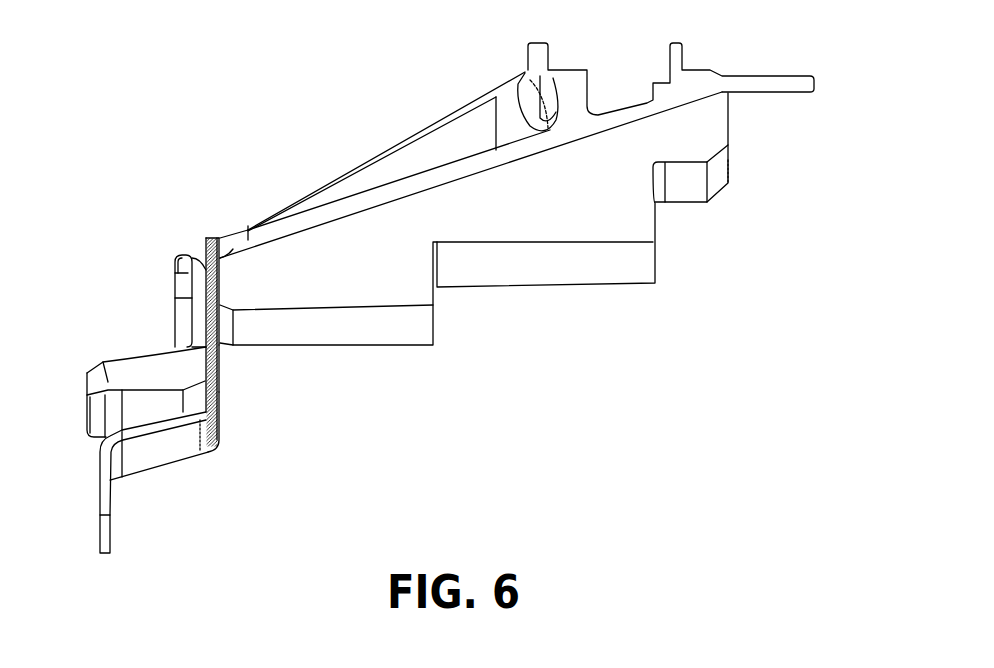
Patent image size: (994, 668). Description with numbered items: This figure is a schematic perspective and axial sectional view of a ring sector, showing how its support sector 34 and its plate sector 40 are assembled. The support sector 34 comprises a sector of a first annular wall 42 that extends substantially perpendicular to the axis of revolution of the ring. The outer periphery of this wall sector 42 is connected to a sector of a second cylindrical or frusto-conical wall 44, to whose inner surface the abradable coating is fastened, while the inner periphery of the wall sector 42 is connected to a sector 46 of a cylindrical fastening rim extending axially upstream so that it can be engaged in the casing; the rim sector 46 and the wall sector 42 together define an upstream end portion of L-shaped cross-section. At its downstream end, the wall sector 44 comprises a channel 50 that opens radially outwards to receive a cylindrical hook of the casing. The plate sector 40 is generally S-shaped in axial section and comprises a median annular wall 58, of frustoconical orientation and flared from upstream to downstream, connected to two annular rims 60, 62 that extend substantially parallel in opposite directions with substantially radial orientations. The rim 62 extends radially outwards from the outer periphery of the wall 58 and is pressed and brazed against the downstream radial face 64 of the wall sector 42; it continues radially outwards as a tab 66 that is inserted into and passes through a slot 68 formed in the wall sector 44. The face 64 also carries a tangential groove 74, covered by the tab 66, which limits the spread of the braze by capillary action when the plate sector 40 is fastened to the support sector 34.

The plate sector 40 is at (118, 560).
The channel 50 is at (563, 58).
The support sector 34 is at (471, 165).
The second wall sector 44 is at (252, 224).
The first wall sector 42 is at (203, 317).
The tab 66 is at (248, 229).
The downstream radial face 64 is at (223, 372).
The rim 62 is at (223, 400).
The slot 68 is at (206, 250).
The groove 74 is at (203, 347).
The fastening rim sector 46 is at (103, 360).
The median annular wall 58 is at (158, 463).
The rim 60 is at (98, 530).